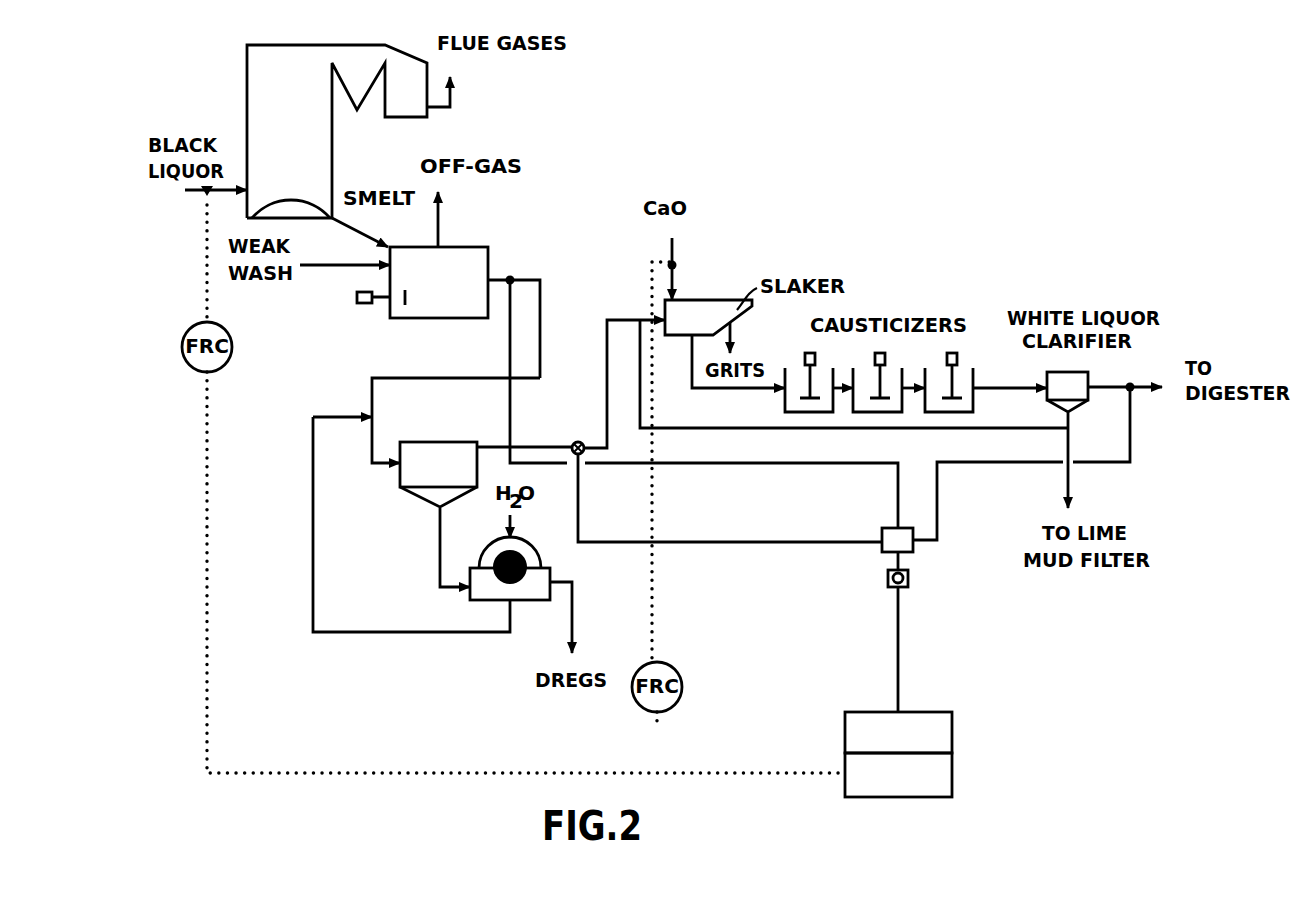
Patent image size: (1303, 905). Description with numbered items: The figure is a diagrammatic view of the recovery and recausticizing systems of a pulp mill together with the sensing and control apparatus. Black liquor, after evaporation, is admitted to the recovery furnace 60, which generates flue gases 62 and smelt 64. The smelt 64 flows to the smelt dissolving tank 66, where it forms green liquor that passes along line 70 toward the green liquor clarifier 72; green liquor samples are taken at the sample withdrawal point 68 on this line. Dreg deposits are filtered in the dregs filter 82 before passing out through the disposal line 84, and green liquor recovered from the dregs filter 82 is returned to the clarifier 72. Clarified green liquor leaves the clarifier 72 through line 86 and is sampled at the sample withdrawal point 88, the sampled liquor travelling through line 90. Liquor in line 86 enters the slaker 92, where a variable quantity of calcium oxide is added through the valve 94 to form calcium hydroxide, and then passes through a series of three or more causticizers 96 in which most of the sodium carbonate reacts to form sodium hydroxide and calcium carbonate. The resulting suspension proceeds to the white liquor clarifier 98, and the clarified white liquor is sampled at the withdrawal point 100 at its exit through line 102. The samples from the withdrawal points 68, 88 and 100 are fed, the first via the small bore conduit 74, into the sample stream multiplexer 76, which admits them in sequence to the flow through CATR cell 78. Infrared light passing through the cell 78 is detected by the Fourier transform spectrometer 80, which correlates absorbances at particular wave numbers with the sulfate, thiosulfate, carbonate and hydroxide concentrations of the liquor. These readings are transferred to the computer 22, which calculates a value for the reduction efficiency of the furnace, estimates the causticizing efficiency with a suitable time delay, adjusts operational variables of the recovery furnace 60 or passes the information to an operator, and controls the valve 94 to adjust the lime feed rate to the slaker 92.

The computer 22 is at (955, 783).
The recovery furnace 60 is at (322, 44).
The flue gases 62 is at (453, 95).
The smelt 64 is at (353, 228).
The smelt dissolving tank 66 is at (455, 255).
The sample withdrawal point 68 is at (510, 278).
The line 70 is at (423, 378).
The green liquor clarifier 72 is at (448, 452).
The small bore conduit 74 is at (750, 463).
The sample stream multiplexer 76 is at (885, 528).
The flow through CATR cell 78 is at (912, 583).
The Fourier transform spectrometer 80 is at (855, 711).
The dregs filter 82 is at (545, 554).
The disposal line 84 is at (573, 637).
The line 86 is at (535, 444).
The sample withdrawal point 88 is at (575, 433).
The line 90 is at (698, 542).
The slaker 92 is at (718, 298).
The valve 94 is at (676, 265).
The causticizers 96 is at (793, 372).
The white liquor clarifier 98 is at (1047, 373).
The withdrawal point 100 is at (1130, 383).
The line 102 is at (975, 466).